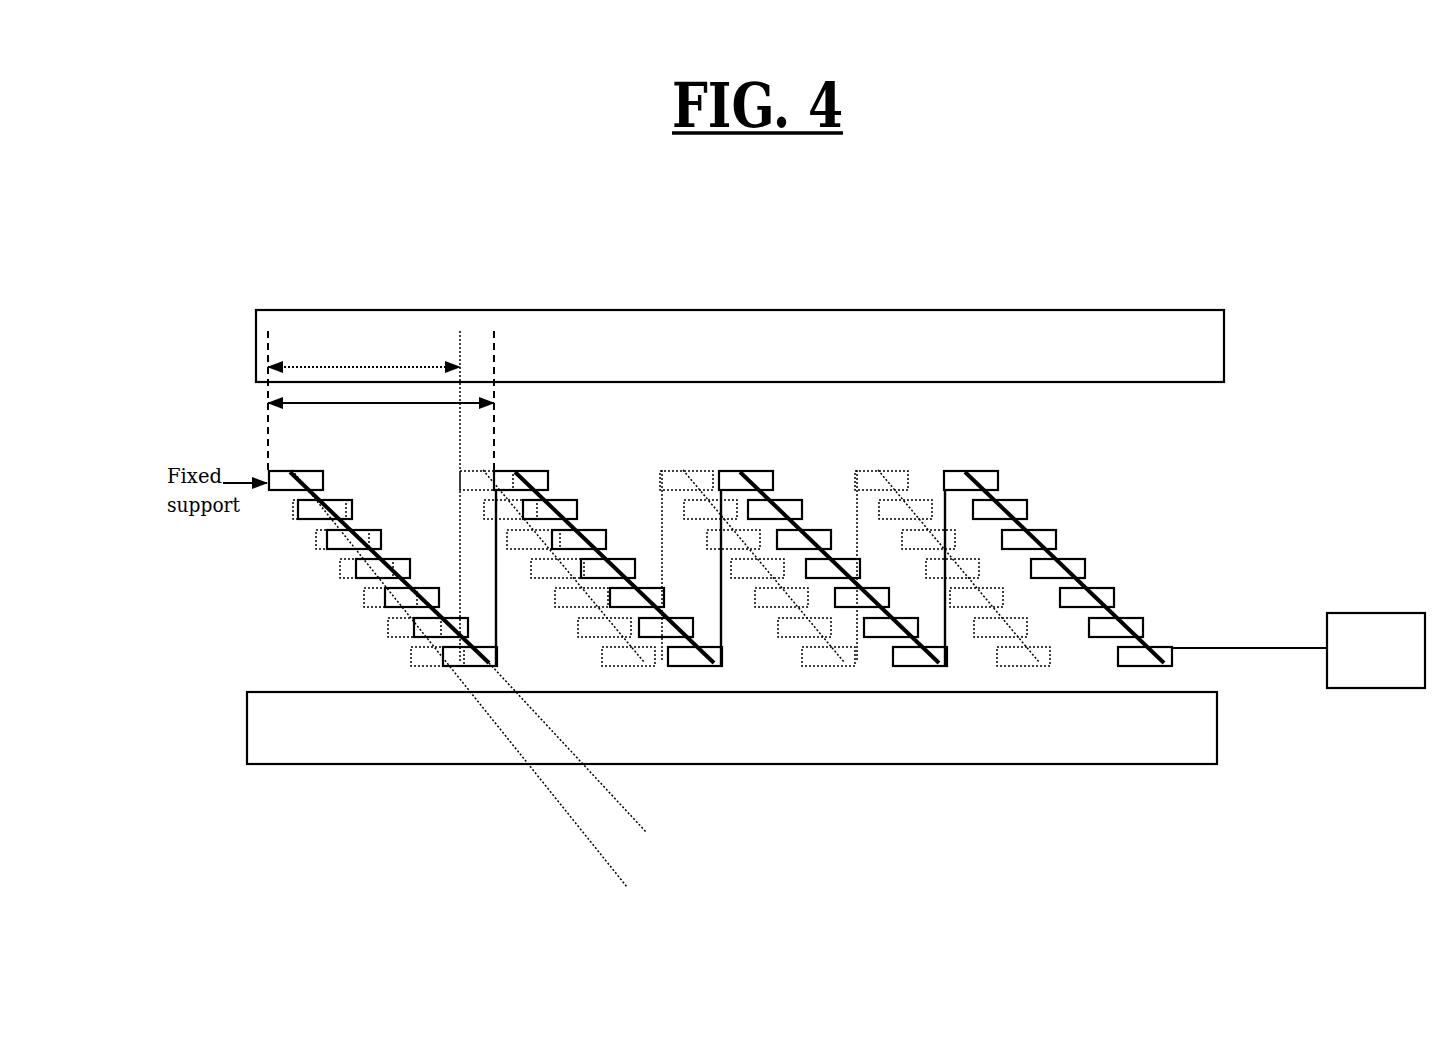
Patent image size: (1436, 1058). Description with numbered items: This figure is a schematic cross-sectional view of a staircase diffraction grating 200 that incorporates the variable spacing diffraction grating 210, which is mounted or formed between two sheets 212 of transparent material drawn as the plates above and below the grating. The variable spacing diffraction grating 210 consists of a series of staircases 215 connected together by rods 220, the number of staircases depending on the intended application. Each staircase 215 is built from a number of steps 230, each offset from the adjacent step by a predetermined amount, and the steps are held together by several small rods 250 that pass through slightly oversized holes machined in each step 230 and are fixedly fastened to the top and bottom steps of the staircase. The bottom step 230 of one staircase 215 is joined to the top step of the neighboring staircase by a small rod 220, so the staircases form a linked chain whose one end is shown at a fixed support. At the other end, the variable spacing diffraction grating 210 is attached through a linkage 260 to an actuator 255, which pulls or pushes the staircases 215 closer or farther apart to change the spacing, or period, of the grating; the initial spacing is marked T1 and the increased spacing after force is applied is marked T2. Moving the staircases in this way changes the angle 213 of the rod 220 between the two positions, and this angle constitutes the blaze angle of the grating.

The staircase diffraction grating 200 is at (493, 298).
The variable spacing diffraction grating 210 is at (292, 624).
The sheets of transparent material 212 is at (1213, 729).
The angle of rod 213 is at (637, 823).
The staircase 215 is at (1125, 591).
The rod 220 is at (508, 595).
The step 230 is at (765, 468).
The small rods 250 is at (792, 527).
The actuator 255 is at (1376, 650).
The linkage 260 is at (1269, 654).